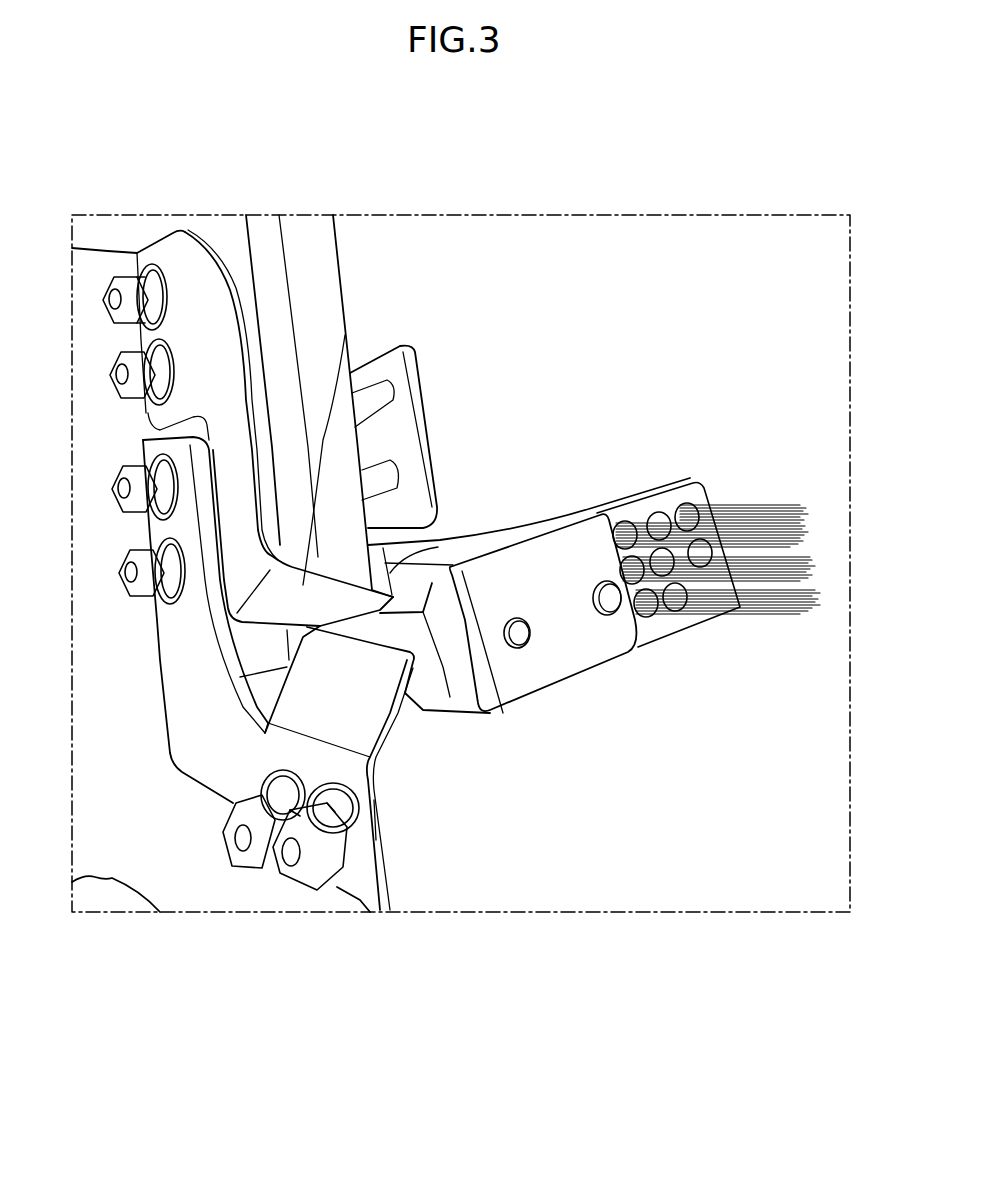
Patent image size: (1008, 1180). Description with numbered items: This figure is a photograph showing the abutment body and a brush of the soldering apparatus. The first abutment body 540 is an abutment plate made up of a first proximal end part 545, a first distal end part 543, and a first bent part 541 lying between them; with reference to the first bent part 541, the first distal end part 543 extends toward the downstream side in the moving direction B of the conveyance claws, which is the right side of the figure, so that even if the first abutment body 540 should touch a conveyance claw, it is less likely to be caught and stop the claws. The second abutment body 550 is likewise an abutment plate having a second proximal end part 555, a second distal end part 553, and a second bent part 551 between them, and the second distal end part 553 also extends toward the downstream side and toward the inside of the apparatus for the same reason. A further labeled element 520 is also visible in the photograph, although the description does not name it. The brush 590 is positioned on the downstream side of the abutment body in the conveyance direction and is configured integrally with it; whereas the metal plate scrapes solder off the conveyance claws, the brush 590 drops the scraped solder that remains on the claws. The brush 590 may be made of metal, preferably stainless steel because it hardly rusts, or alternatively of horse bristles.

The base housing 520 is at (392, 932).
The first abutment body 540 is at (345, 532).
The first bent part 541 is at (345, 335).
The first distal end part 543 is at (392, 590).
The first proximal end part 545 is at (253, 610).
The second abutment body 550 is at (438, 742).
The second bent part 551 is at (380, 753).
The second distal end part 553 is at (413, 662).
The second proximal end part 555 is at (387, 833).
The brush 590 is at (690, 500).